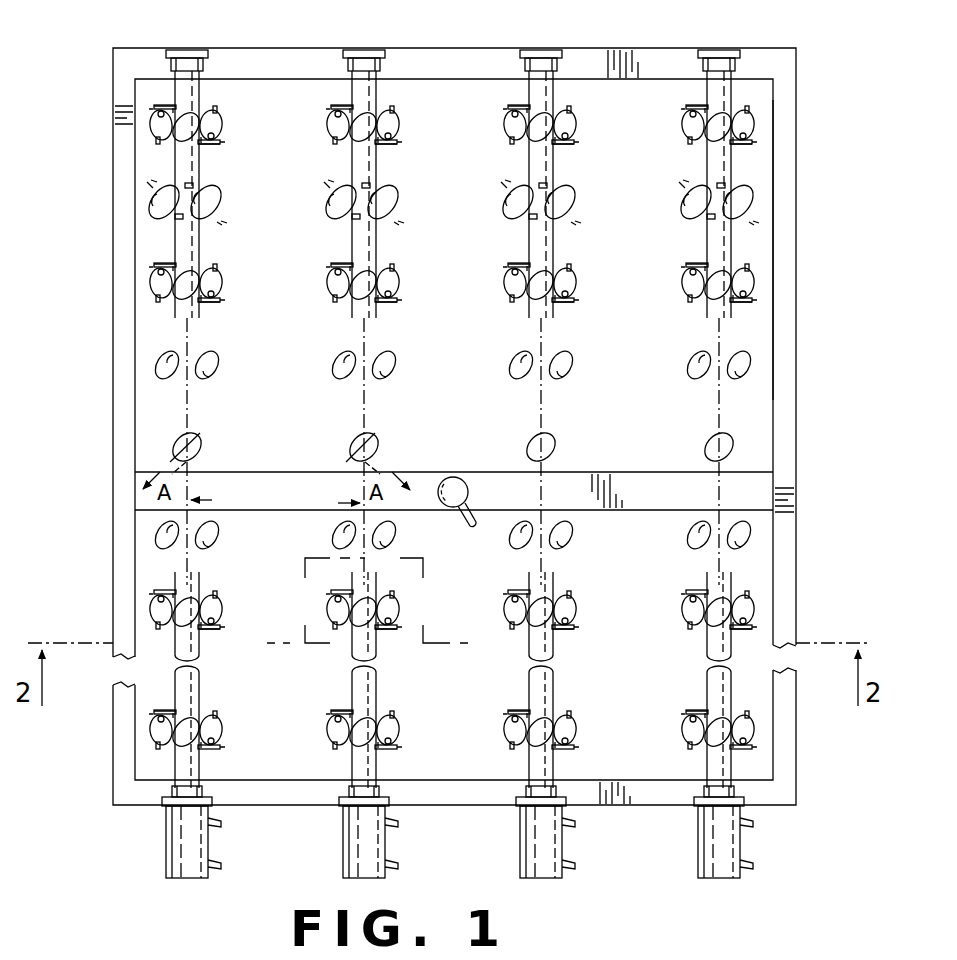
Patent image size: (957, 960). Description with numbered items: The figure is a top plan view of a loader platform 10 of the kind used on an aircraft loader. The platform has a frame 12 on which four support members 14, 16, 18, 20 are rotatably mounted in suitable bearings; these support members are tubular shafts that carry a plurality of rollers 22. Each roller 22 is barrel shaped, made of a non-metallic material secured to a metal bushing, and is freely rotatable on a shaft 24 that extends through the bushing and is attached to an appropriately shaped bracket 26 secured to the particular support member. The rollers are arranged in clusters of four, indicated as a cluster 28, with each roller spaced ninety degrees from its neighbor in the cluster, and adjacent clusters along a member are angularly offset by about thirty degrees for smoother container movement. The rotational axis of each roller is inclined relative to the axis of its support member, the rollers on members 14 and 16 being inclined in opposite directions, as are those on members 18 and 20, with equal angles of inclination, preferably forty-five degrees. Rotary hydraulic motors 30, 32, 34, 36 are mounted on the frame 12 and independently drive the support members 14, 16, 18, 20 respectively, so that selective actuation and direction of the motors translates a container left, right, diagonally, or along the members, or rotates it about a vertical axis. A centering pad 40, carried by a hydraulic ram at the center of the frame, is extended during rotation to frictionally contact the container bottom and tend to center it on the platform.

The loader platform 10 is at (801, 153).
The frame 12 is at (783, 257).
The support member 14 is at (198, 96).
The support member 16 is at (376, 92).
The support member 18 is at (554, 92).
The support member 20 is at (732, 92).
The roller 22 is at (216, 128).
The shaft 24 is at (212, 145).
The bracket 26 is at (208, 104).
The cluster 28 is at (133, 125).
The rotary hydraulic motor 30 is at (166, 841).
The rotary hydraulic motor 32 is at (343, 841).
The rotary hydraulic motor 34 is at (520, 841).
The rotary hydraulic motor 36 is at (698, 845).
The centering pad 40 is at (452, 478).